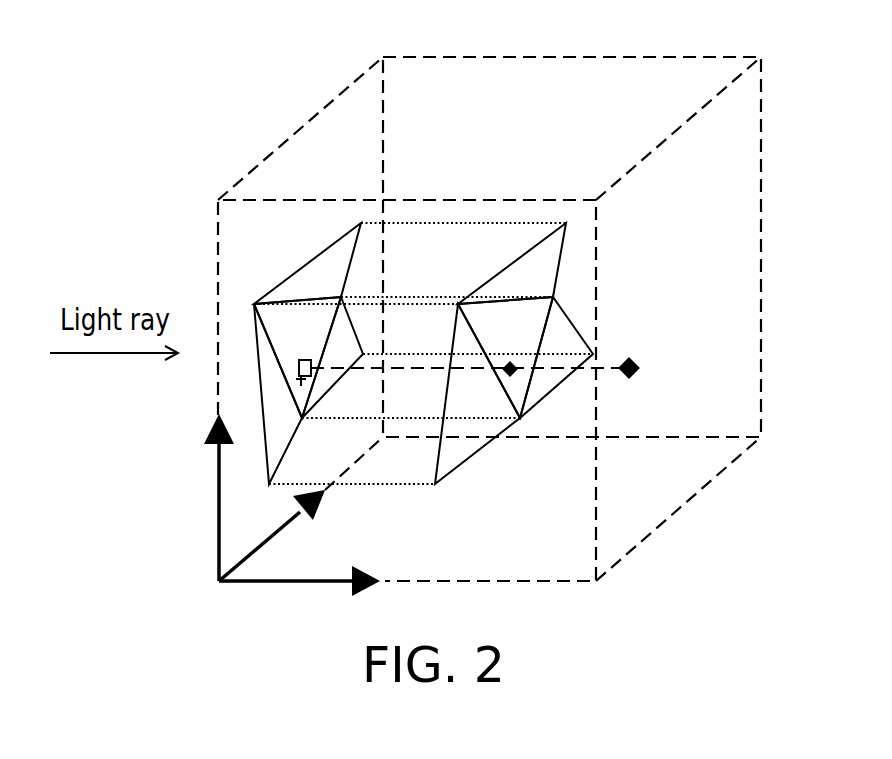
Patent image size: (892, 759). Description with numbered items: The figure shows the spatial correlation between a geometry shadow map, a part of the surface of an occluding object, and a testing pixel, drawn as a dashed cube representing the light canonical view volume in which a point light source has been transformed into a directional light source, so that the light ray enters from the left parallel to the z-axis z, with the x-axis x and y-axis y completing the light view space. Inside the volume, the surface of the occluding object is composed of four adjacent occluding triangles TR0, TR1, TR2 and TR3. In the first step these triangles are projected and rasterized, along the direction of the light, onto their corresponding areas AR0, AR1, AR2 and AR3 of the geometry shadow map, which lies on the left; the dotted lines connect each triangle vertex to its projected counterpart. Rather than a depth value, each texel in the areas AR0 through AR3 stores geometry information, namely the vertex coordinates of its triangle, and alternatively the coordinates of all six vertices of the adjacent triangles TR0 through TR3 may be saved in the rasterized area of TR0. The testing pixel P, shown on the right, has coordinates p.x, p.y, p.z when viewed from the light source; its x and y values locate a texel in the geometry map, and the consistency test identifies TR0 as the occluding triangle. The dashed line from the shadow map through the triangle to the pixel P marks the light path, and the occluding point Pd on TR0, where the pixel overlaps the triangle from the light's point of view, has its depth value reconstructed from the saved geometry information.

The rasterized area AR0 is at (297, 357).
The rasterized area AR1 is at (307, 263).
The rasterized area AR2 is at (278, 394).
The rasterized area AR3 is at (332, 357).
The occluding triangle TR0 is at (505, 357).
The occluding triangle TR1 is at (512, 263).
The occluding triangle TR2 is at (477, 394).
The occluding triangle TR3 is at (556, 357).
The occluding point Pd is at (458, 359).
The testing pixel P is at (682, 389).
The x-axis x is at (195, 509).
The y-axis y is at (256, 525).
The z-axis z is at (316, 562).